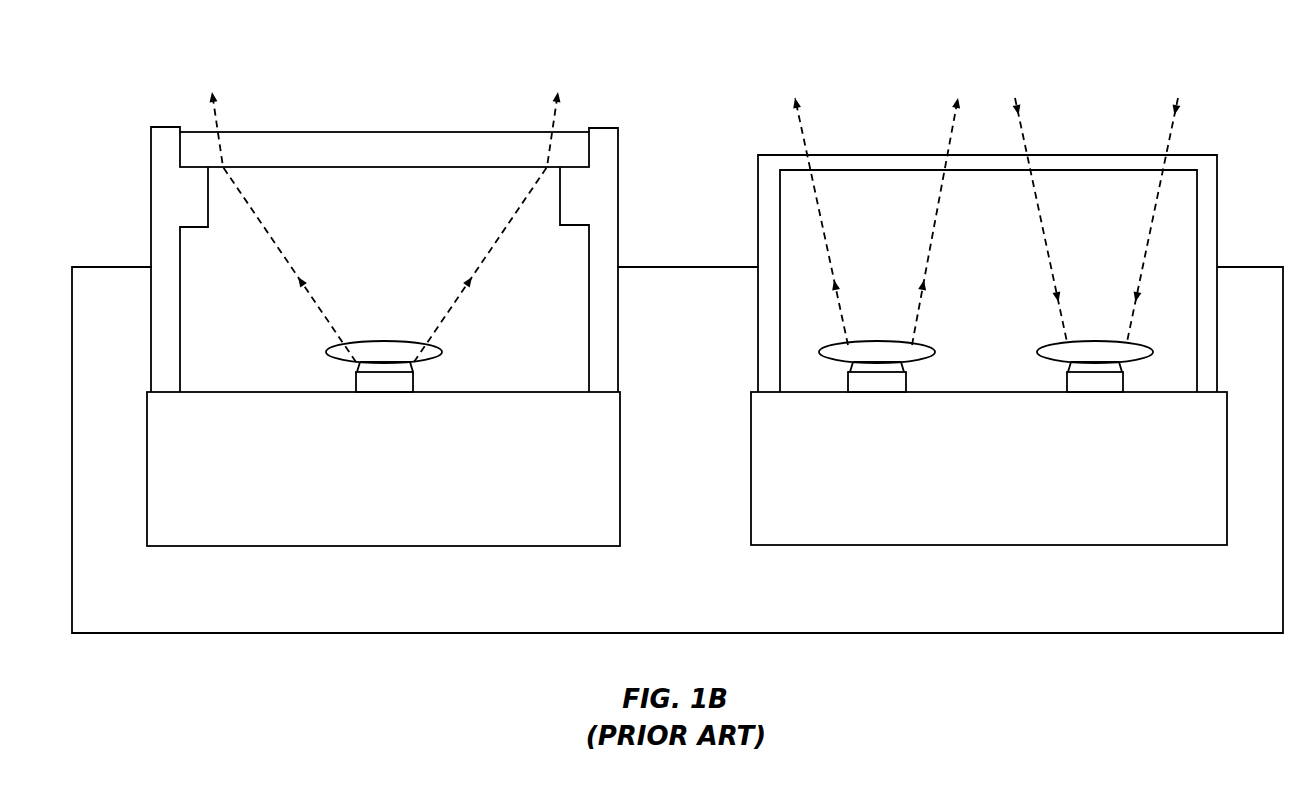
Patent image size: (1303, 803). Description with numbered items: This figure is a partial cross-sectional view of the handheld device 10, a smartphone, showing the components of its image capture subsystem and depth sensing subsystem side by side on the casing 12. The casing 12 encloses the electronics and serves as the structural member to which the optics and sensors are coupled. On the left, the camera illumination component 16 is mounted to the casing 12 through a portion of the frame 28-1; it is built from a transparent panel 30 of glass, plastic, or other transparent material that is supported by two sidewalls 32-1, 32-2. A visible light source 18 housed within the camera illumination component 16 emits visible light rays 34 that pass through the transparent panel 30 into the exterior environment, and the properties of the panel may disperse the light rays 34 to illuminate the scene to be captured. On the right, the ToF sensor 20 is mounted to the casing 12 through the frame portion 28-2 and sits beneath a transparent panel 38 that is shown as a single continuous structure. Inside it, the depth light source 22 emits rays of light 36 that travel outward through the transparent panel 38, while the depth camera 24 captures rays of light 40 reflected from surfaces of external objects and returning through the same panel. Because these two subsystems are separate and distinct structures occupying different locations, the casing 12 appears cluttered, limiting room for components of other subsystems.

The handheld device 10 is at (1127, 70).
The casing 12 is at (677, 450).
The camera illumination component 16 is at (521, 63).
The visible light source 18 is at (385, 385).
The ToF sensor 20 is at (883, 75).
The depth light source 22 is at (879, 385).
The depth camera 24 is at (1097, 385).
The frame portion 28-1 is at (383, 469).
The frame portion 28-2 is at (989, 468).
The transparent panel 30 is at (385, 132).
The sidewall 32-1 is at (151, 145).
The sidewall 32-2 is at (618, 148).
The visible light rays 34 is at (384, 341).
The rays of light 36 is at (872, 341).
The transparent panel 38 is at (1217, 155).
The rays of light 40 is at (1095, 341).